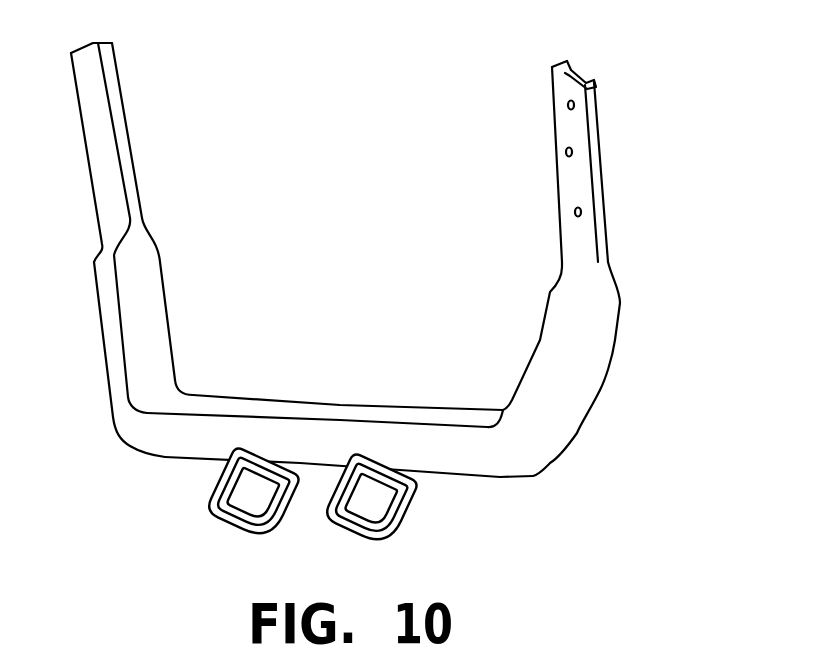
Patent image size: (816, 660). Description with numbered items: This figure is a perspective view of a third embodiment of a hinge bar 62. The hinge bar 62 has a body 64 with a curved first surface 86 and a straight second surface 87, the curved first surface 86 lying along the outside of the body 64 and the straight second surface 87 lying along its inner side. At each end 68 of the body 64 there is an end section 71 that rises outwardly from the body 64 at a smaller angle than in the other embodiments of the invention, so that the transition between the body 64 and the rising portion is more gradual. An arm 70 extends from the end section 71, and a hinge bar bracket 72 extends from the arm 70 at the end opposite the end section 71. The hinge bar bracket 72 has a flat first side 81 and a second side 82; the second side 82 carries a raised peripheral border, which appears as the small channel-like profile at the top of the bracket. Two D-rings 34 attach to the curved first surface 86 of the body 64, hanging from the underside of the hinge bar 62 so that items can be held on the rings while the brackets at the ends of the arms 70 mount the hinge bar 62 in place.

The D-ring 34 is at (227, 517).
The hinge bar 62 is at (145, 275).
The body 64 is at (450, 453).
The end 68 is at (178, 380).
The arm 70 is at (600, 340).
The end section 71 is at (522, 457).
The hinge bar bracket 72 is at (578, 133).
The flat first side 81 is at (565, 177).
The second side 82 is at (575, 70).
The curved first surface 86 is at (207, 442).
The straight second surface 87 is at (372, 410).